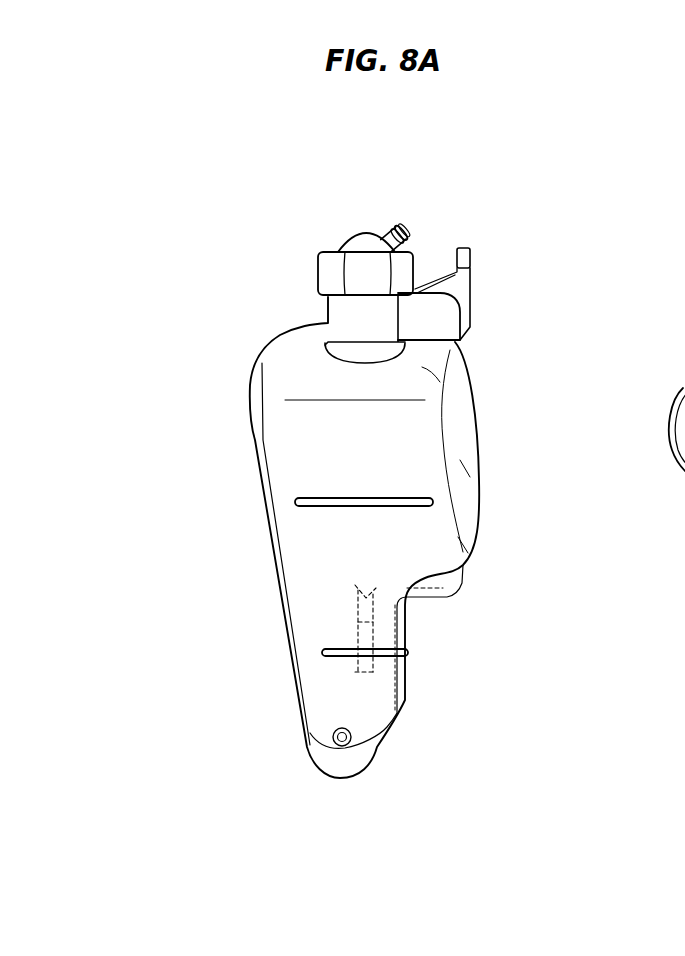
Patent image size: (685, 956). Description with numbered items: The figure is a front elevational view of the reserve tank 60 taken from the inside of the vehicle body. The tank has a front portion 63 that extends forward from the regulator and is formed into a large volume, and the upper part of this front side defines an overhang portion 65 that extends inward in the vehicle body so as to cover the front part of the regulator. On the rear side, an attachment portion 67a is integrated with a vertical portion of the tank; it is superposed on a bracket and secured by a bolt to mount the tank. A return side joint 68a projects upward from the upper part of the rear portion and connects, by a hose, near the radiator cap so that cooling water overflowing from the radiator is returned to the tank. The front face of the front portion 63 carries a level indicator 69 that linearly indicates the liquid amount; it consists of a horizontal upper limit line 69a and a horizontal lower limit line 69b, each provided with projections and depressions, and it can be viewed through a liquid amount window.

The reserve tank 60 is at (227, 337).
The front portion 63 is at (303, 432).
The overhang portion 65 is at (355, 275).
The attachment portion 67a is at (463, 248).
The return side joint 68a is at (386, 228).
The level indicator 69 is at (307, 495).
The upper limit line 69a is at (313, 505).
The lower limit line 69b is at (333, 657).